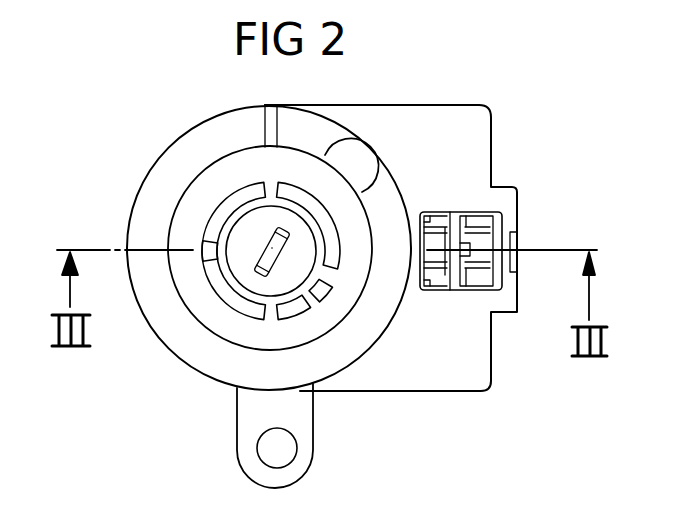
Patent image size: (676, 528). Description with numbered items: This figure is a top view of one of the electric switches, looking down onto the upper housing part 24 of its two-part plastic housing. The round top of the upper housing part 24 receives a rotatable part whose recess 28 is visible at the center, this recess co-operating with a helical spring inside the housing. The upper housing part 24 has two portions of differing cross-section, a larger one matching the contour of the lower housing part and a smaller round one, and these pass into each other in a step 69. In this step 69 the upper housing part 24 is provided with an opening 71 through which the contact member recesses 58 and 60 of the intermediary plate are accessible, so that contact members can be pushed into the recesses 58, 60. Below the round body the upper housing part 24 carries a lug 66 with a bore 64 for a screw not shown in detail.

The upper housing part 24 is at (475, 123).
The step 69 is at (440, 122).
The recess 28 is at (266, 251).
The contact member recess 58 is at (510, 254).
The contact member recess 60 is at (490, 227).
The opening 71 is at (455, 283).
The bore 64 is at (267, 449).
The lug 66 is at (303, 447).